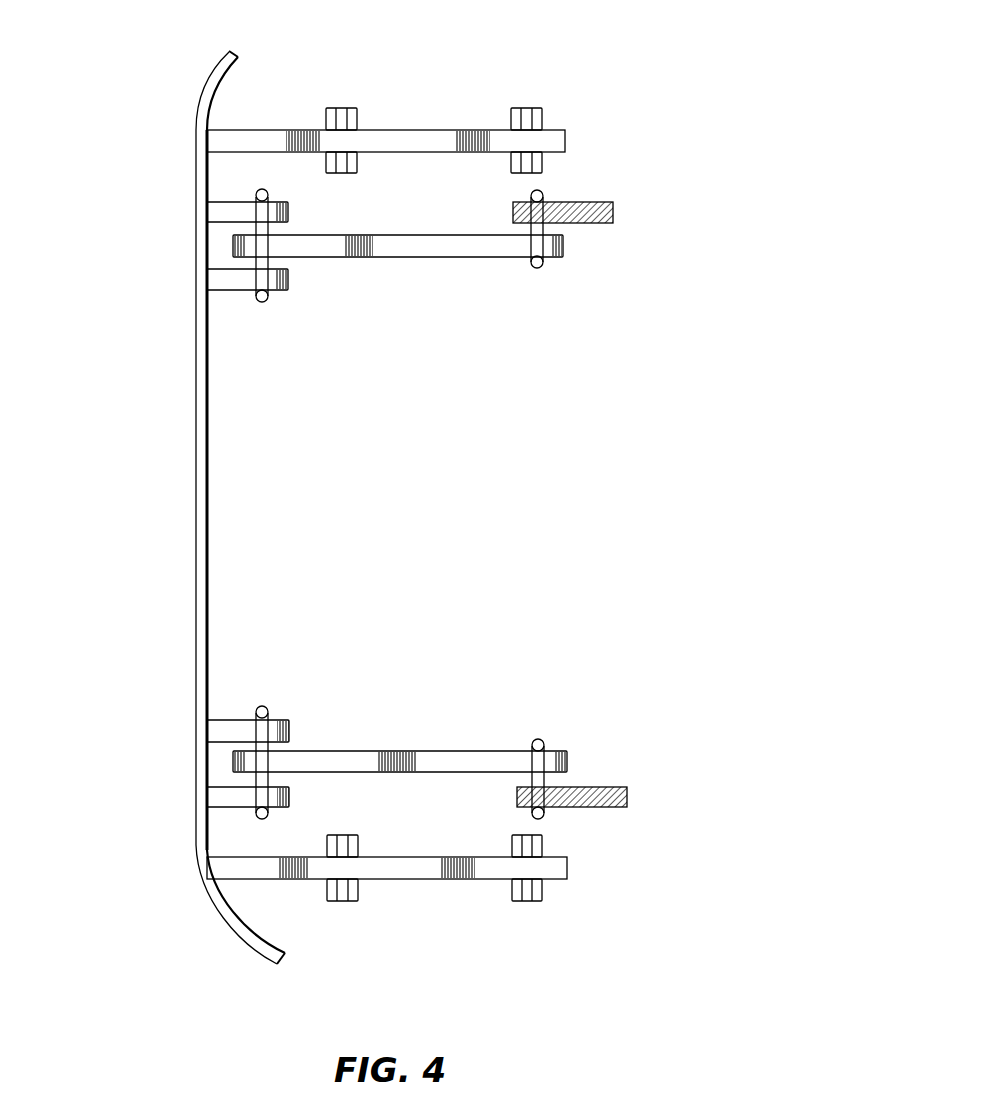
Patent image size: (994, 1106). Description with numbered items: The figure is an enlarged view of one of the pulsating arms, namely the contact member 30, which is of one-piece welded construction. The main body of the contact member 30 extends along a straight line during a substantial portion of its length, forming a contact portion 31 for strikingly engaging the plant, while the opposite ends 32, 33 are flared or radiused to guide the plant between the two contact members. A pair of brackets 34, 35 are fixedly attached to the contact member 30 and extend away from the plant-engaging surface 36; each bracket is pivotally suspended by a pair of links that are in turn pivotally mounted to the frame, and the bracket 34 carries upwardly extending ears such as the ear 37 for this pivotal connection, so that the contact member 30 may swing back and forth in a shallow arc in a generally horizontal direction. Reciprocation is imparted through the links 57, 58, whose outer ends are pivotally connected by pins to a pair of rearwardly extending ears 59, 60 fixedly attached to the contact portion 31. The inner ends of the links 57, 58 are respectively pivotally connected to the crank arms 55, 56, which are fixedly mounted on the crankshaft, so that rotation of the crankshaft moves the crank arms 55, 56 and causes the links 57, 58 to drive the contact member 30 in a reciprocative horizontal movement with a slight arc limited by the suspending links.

The contact member 30 is at (110, 265).
The contact portion 31 is at (261, 500).
The opposite end 32 is at (227, 78).
The opposite end 33 is at (262, 938).
The bracket 34 is at (403, 876).
The bracket 35 is at (425, 138).
The plant-engaging surface 36 is at (196, 397).
The ear 37 is at (547, 890).
The crank arm 55 is at (592, 786).
The crank arm 56 is at (588, 202).
The link 57 is at (425, 758).
The link 58 is at (440, 249).
The ear 59 is at (293, 729).
The ear 60 is at (288, 279).